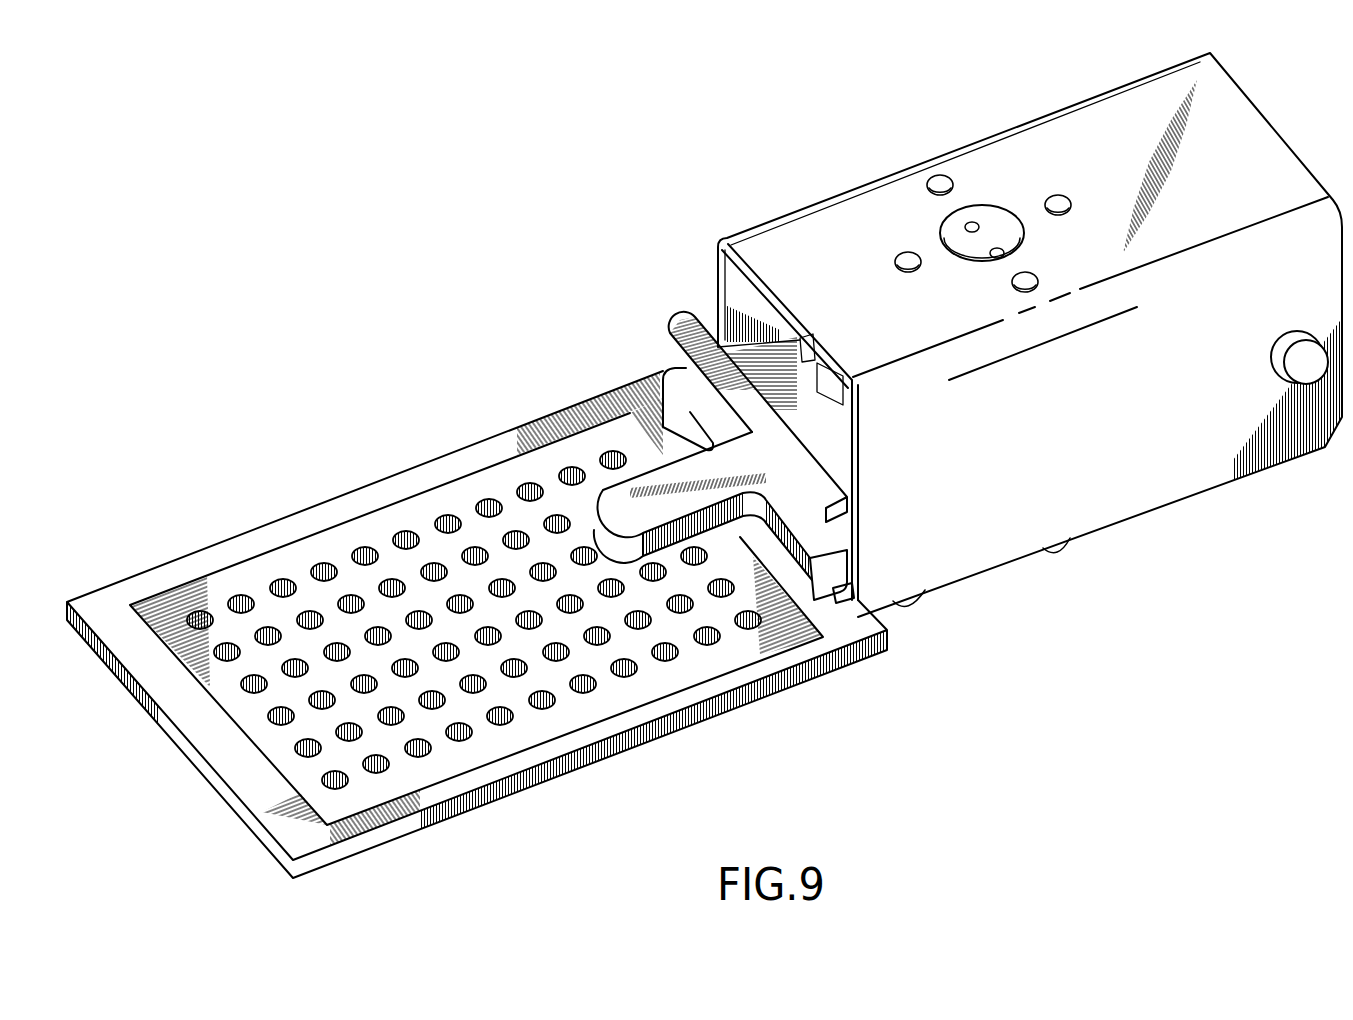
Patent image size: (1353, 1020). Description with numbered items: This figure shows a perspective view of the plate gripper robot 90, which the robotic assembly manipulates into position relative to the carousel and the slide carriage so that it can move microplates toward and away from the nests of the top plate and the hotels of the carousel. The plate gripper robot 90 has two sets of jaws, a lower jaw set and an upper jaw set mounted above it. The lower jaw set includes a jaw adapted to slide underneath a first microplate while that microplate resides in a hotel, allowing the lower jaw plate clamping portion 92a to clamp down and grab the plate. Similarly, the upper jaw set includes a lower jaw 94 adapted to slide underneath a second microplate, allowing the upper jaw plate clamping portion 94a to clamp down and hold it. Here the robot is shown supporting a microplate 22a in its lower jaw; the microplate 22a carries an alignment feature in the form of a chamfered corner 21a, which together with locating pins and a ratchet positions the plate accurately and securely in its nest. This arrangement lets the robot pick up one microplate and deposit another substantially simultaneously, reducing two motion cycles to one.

The plate gripper robot 90 is at (1018, 152).
The upper jaw plate clamping portion 94a is at (690, 330).
The chamfered corner 21a is at (647, 385).
The lower jaw 94 is at (622, 503).
The lower jaw plate clamping portion 92a is at (837, 593).
The microplate 22a is at (560, 672).